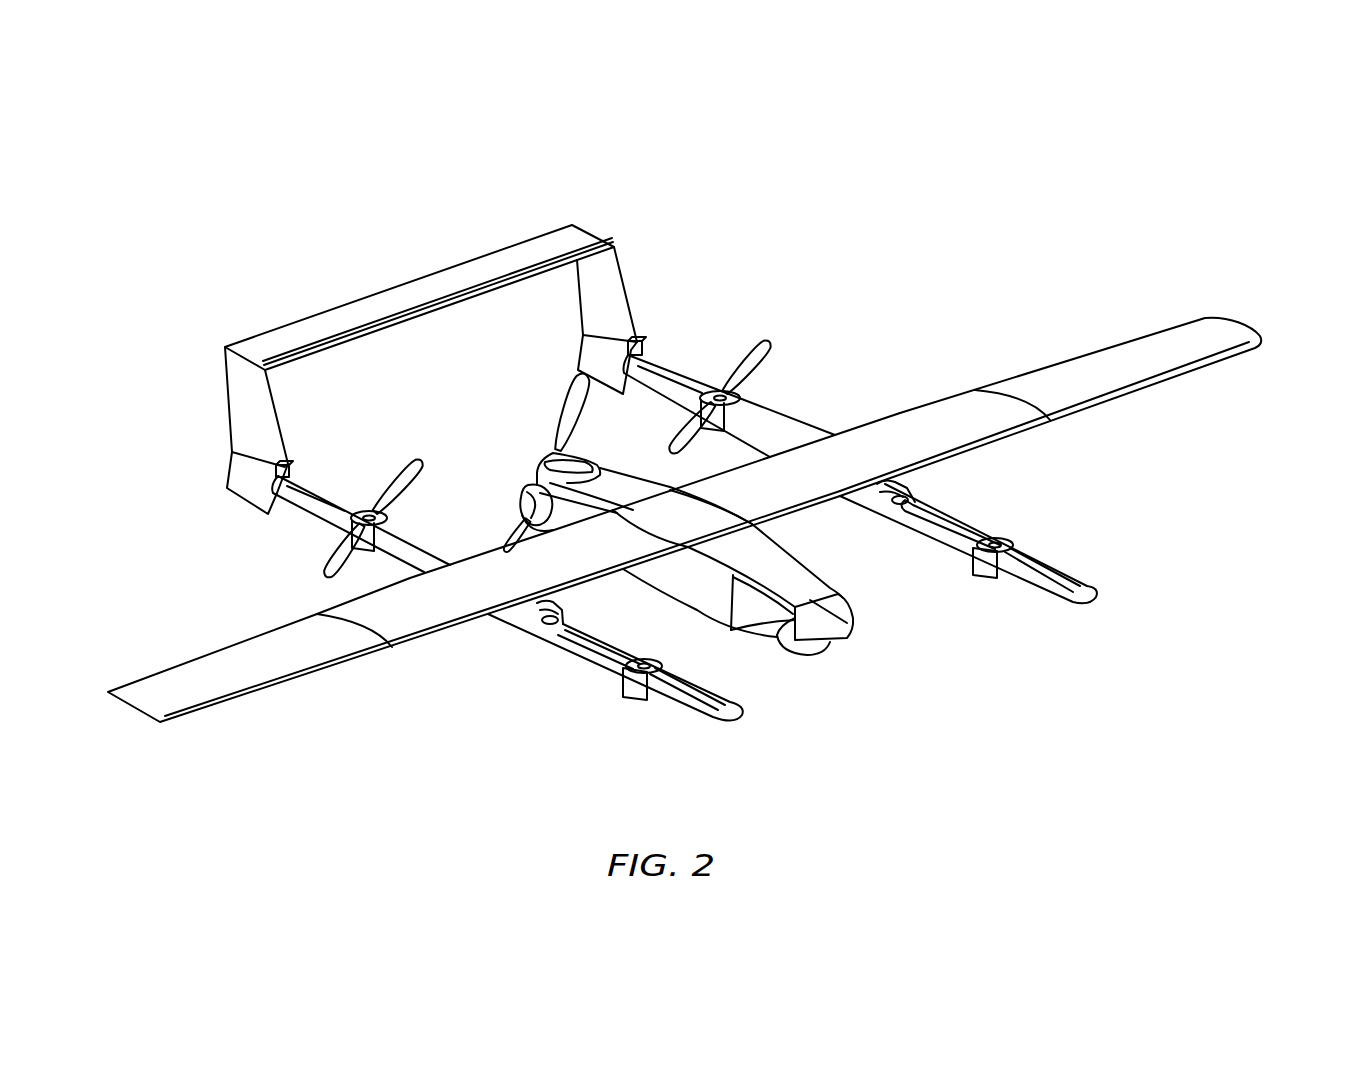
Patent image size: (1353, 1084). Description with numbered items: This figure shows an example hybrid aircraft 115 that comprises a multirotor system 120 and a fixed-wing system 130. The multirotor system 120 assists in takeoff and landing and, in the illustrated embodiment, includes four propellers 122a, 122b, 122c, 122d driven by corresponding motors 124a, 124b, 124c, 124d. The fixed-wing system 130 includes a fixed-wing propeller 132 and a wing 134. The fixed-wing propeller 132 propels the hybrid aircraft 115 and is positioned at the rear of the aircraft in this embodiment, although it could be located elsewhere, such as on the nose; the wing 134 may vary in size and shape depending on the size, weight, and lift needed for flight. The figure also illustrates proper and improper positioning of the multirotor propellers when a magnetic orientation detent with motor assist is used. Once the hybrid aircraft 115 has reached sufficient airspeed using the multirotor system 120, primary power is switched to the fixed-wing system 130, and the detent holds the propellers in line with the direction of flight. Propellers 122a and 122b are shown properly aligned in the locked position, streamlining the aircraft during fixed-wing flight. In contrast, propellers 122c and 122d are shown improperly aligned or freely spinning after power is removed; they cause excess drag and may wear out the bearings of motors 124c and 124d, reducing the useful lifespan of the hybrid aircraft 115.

The hybrid aircraft 115 is at (1097, 212).
The multirotor system 120 is at (523, 630).
The propeller 122a is at (663, 678).
The propeller 122b is at (1011, 571).
The propeller 122c is at (769, 367).
The propeller 122d is at (335, 522).
The motor 124a is at (633, 688).
The motor 124b is at (985, 570).
The motor 124c is at (716, 385).
The motor 124d is at (385, 516).
The fixed-wing system 130 is at (855, 628).
The fixed-wing propeller 132 is at (565, 400).
The wing 134 is at (1215, 322).